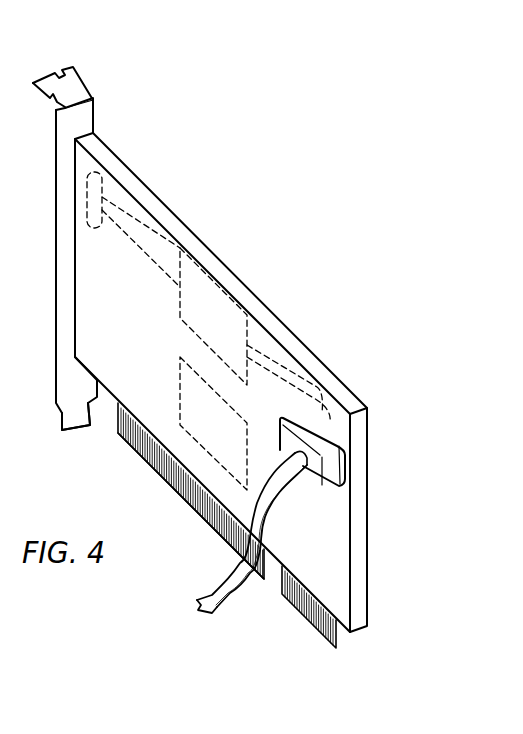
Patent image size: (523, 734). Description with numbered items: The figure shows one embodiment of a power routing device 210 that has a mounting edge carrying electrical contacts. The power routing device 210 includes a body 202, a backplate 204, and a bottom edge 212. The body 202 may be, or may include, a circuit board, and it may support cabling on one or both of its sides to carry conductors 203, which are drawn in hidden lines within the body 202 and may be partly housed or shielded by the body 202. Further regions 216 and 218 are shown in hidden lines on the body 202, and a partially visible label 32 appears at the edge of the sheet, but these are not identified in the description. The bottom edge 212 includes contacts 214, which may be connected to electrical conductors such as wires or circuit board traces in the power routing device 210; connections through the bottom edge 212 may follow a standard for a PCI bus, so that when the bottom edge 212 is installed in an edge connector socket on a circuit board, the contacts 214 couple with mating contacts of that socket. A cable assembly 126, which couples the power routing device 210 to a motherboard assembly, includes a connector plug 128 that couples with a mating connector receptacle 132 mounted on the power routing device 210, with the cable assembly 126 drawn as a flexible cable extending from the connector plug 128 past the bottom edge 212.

The power routing device 210 is at (165, 163).
The mounting bracket 32 is at (48, 269).
The backplate 204 is at (72, 427).
The body 202 is at (136, 267).
The conductors 203 is at (157, 264).
The second module 216 is at (230, 325).
The third module 218 is at (230, 431).
The bottom edge 212 is at (184, 487).
The contacts 214 is at (195, 505).
The mating connector receptacle 132 is at (345, 472).
The connector plug 128 is at (304, 488).
The cable assembly 126 is at (211, 591).